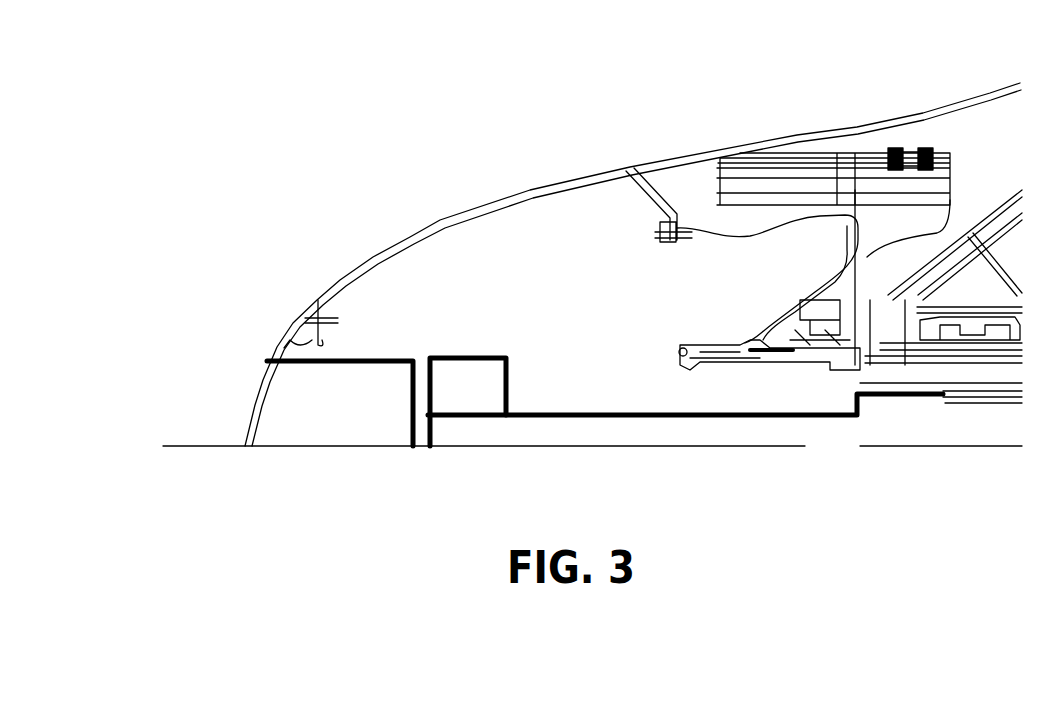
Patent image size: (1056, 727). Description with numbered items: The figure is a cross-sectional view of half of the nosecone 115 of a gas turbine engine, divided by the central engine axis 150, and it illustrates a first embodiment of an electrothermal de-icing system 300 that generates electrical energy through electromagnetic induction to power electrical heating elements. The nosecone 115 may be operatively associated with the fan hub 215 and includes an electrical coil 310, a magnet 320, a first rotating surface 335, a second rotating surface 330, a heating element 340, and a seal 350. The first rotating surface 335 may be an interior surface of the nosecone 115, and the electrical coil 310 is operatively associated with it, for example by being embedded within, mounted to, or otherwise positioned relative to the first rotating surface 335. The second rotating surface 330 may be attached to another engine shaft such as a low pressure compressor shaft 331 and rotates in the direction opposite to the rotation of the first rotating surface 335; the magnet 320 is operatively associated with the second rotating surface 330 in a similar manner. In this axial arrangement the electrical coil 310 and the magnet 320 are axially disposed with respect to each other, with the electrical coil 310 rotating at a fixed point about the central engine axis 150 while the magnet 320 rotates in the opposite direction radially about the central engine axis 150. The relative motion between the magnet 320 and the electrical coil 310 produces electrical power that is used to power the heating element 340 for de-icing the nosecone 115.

The nosecone 115 is at (430, 75).
The central engine axis 150 is at (200, 445).
The fan hub 215 is at (732, 208).
The de-icing system 300 is at (475, 302).
The electrical coil 310 is at (340, 387).
The magnet 320 is at (462, 398).
The second rotating surface 330 is at (678, 435).
The low pressure compressor shaft 331 is at (965, 400).
The first rotating surface 335 is at (567, 188).
The heating element 340 is at (405, 230).
The seal 350 is at (670, 348).